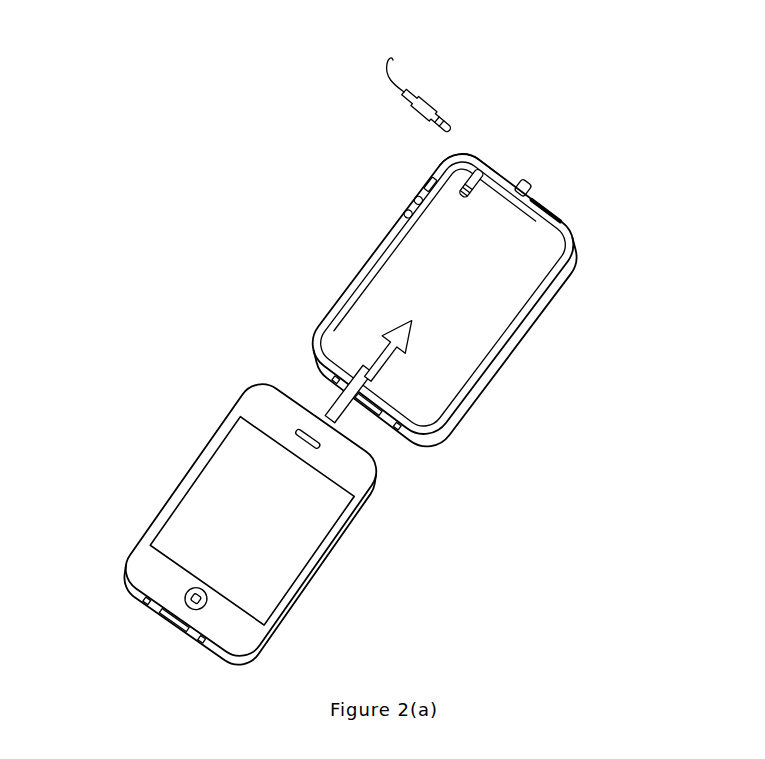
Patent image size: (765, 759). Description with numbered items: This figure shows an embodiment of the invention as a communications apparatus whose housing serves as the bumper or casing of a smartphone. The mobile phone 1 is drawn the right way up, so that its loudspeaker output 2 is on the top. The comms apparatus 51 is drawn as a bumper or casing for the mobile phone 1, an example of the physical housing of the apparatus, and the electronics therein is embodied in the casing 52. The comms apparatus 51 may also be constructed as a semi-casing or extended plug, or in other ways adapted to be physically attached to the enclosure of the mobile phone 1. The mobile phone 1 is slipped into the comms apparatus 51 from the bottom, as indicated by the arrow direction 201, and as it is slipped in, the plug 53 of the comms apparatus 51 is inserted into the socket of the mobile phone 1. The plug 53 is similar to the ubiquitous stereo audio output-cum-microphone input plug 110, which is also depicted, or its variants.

The mobile phone 1 is at (120, 432).
The loudspeaker output 2 is at (297, 435).
The comms apparatus 51 is at (297, 225).
The casing 52 is at (478, 152).
The plug 53 is at (472, 196).
The plug 110 is at (462, 80).
The arrow direction 201 is at (407, 352).